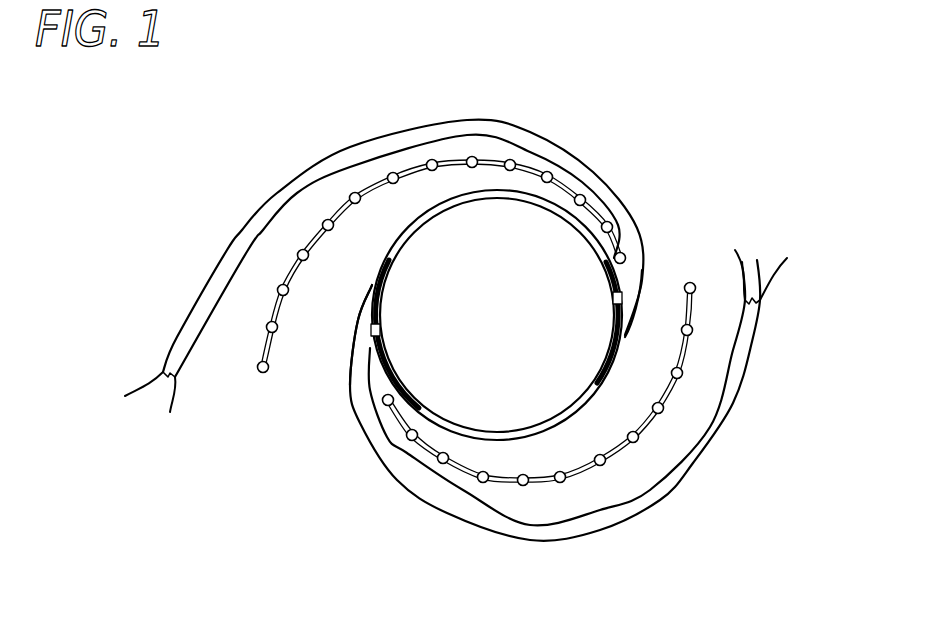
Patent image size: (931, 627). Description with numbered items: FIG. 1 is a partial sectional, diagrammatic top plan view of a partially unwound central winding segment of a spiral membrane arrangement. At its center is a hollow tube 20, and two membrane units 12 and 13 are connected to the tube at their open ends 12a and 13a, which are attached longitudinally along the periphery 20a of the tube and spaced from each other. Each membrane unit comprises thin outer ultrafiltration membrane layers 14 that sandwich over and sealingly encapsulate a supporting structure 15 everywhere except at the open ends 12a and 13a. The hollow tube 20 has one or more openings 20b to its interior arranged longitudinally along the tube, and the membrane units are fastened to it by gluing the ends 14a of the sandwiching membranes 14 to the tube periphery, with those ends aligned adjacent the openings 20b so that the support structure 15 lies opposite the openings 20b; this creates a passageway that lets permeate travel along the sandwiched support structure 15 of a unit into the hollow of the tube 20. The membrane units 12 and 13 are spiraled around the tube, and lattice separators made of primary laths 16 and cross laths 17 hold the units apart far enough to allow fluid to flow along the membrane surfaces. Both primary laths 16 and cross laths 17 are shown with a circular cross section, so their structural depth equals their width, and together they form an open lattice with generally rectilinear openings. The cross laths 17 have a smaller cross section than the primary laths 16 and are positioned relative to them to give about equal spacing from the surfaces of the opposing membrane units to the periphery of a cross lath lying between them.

The membrane unit 12 is at (457, 121).
The open end of membrane unit 12a is at (643, 277).
The membrane unit 13 is at (587, 532).
The open end of membrane unit 13a is at (360, 337).
The outer ultrafiltration membrane layer 14 is at (170, 413).
The end of sandwiching membrane 14a is at (597, 248).
The supporting structure 15 is at (177, 337).
The primary lath 16 is at (268, 328).
The cross lath 17 is at (278, 335).
The hollow tube 20 is at (458, 202).
The periphery of hollow tube 20a is at (397, 230).
The opening 20b is at (380, 332).